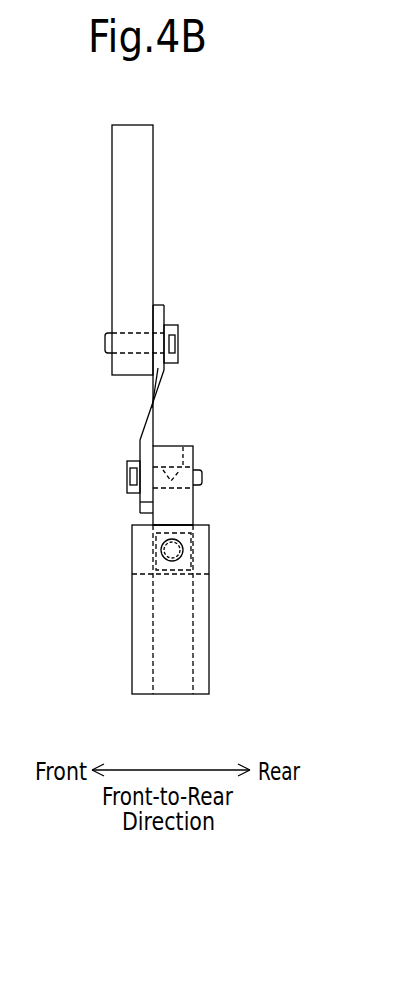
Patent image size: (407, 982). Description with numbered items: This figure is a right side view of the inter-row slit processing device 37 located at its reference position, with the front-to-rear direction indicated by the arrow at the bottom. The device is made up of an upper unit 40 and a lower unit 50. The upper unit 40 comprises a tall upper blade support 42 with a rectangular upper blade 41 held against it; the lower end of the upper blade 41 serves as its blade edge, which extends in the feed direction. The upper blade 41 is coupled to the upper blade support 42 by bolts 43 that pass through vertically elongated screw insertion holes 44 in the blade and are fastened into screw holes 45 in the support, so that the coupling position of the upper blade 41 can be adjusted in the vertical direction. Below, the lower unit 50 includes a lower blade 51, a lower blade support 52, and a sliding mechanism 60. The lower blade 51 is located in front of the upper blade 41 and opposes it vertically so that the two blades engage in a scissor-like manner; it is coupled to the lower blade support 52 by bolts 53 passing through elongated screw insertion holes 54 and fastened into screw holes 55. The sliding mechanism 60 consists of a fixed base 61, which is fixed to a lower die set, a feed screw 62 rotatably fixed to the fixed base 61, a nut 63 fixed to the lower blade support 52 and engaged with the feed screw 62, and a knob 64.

The inter-row slit processing device 37 is at (85, 108).
The upper unit 40 is at (75, 158).
The upper blade 41 is at (161, 376).
The upper blade support 42 is at (155, 182).
The bolt 43 is at (178, 337).
The screw insertion hole 44 is at (170, 320).
The screw hole 45 is at (122, 340).
The lower unit 50 is at (67, 440).
The lower blade 51 is at (139, 446).
The lower blade support 52 is at (194, 505).
The bolt 53 is at (127, 473).
The screw insertion hole 54 is at (128, 493).
The screw hole 55 is at (183, 447).
The sliding mechanism 60 is at (110, 622).
The fixed base 61 is at (209, 643).
The feed screw 62 is at (186, 562).
The nut 63 is at (150, 553).
The knob 64 is at (181, 544).